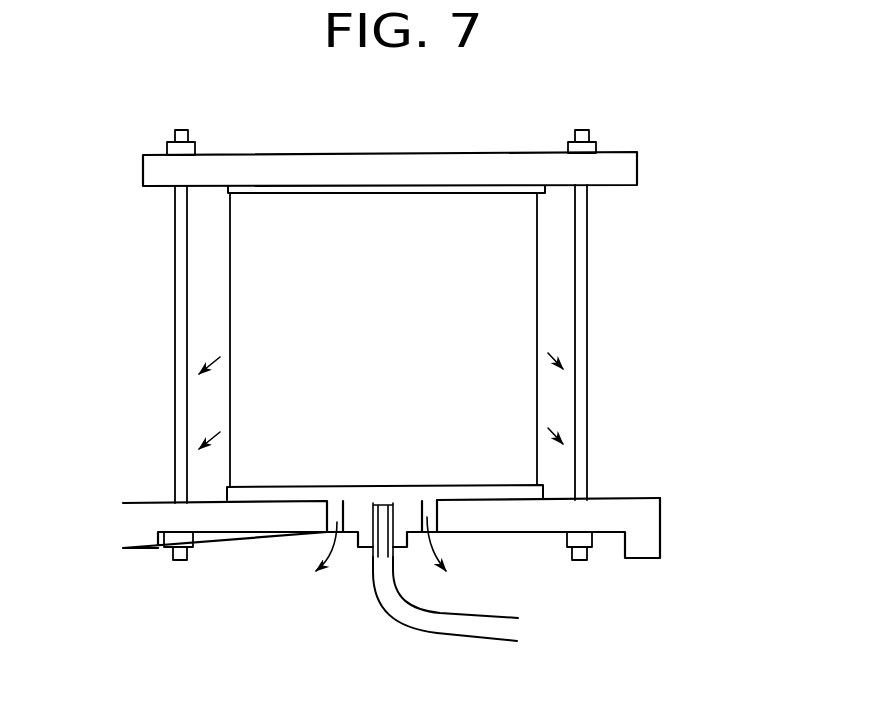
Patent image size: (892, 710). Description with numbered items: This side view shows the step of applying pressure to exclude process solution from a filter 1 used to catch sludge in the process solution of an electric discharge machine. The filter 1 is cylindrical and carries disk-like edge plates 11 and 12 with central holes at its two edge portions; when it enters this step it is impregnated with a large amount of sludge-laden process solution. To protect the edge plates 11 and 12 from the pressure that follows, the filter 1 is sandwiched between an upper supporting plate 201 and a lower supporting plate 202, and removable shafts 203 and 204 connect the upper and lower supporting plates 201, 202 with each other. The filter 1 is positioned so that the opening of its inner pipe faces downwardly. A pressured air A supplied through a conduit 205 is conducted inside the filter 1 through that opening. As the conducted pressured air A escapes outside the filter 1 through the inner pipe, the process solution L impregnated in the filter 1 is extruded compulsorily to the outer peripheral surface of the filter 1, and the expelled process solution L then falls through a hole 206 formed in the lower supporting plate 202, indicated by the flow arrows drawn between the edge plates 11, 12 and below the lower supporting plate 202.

The filter 1 is at (508, 263).
The edge plate 11 is at (349, 197).
The edge plate 12 is at (270, 483).
The upper supporting plate 201 is at (616, 172).
The lower supporting plate 202 is at (642, 508).
The removable shaft 203 is at (175, 318).
The removable shaft 204 is at (587, 317).
The conduit 205 is at (423, 617).
The hole 206 is at (443, 517).
The process solution L is at (545, 430).
The pressured air A is at (533, 631).